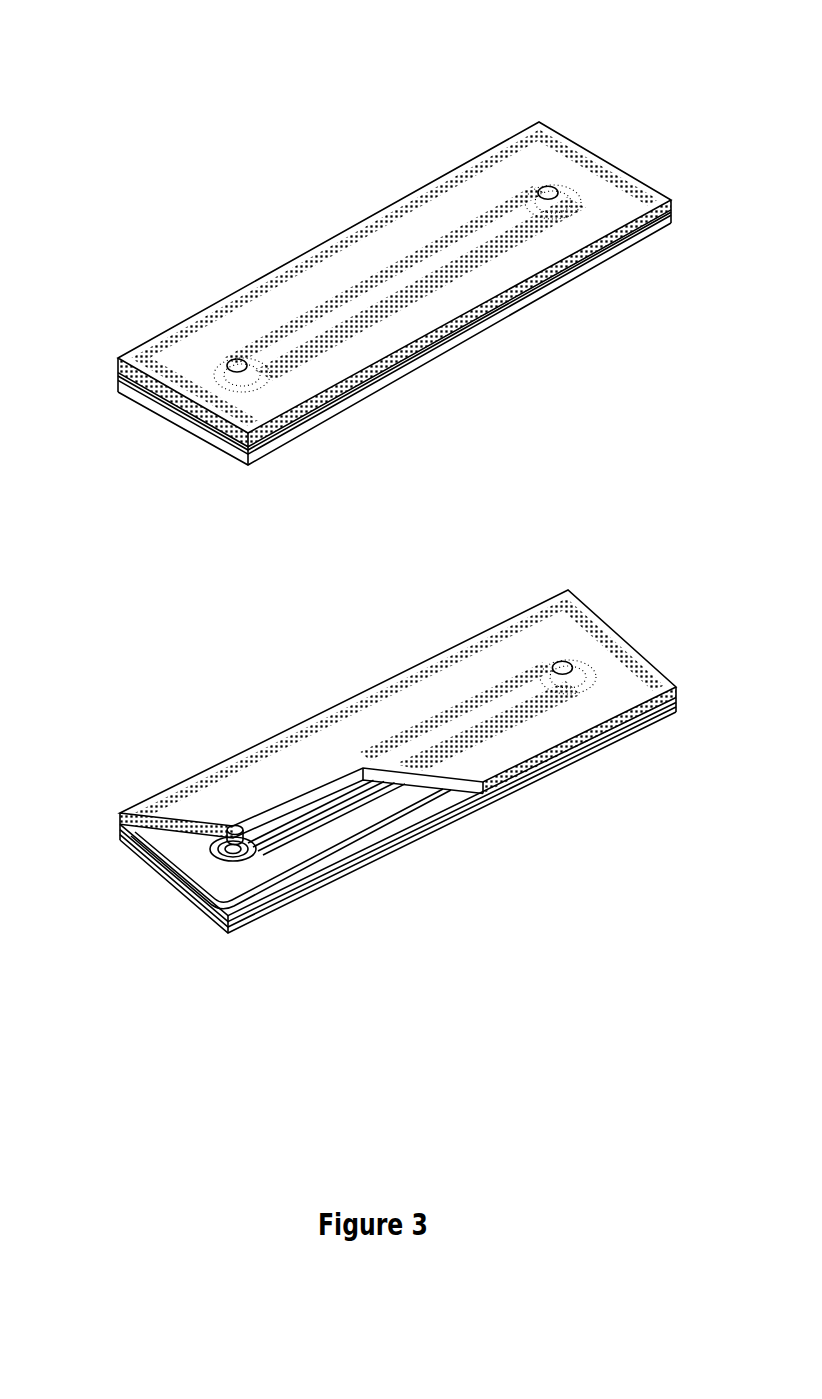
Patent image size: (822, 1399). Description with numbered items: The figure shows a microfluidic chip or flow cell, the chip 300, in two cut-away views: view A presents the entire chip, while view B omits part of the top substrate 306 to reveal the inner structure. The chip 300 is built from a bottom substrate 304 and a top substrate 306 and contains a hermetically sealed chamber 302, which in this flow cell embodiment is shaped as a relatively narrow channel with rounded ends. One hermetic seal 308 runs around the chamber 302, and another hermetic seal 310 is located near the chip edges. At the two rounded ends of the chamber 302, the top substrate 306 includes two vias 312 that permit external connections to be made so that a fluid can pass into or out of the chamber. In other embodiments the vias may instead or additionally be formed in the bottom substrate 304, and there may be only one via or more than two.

The chip 300 is at (366, 513).
The chamber 302 is at (255, 853).
The bottom substrate 304 is at (474, 339).
The top substrate 306 is at (453, 230).
The hermetic seal 308 is at (348, 797).
The hermetic seal 310 is at (338, 867).
The vias 312 is at (236, 357).